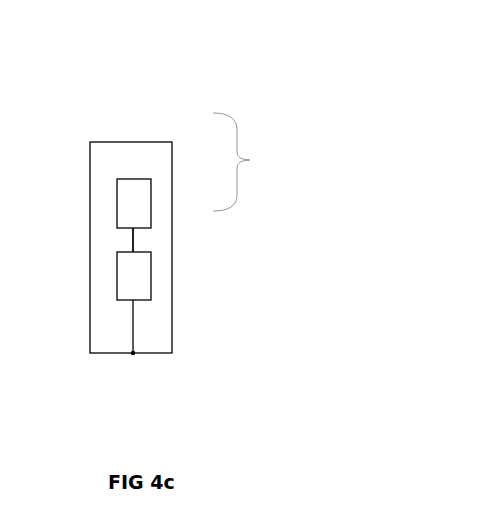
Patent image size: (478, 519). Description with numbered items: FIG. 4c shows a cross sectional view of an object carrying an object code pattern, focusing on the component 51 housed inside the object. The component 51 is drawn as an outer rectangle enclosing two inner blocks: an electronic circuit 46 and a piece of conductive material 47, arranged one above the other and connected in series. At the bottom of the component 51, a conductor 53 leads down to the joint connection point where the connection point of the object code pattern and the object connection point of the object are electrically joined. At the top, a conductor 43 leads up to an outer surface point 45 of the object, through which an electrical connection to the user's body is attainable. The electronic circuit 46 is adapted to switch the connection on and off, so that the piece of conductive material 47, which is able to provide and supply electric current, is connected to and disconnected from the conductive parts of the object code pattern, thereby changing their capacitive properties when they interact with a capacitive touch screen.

The outer surface point 45 is at (133, 141).
The piece of conductive material 47 is at (151, 203).
The electronic circuit 46 is at (151, 275).
The component 51 is at (249, 162).
The conductor 43 is at (133, 237).
The conductor 53 is at (133, 313).